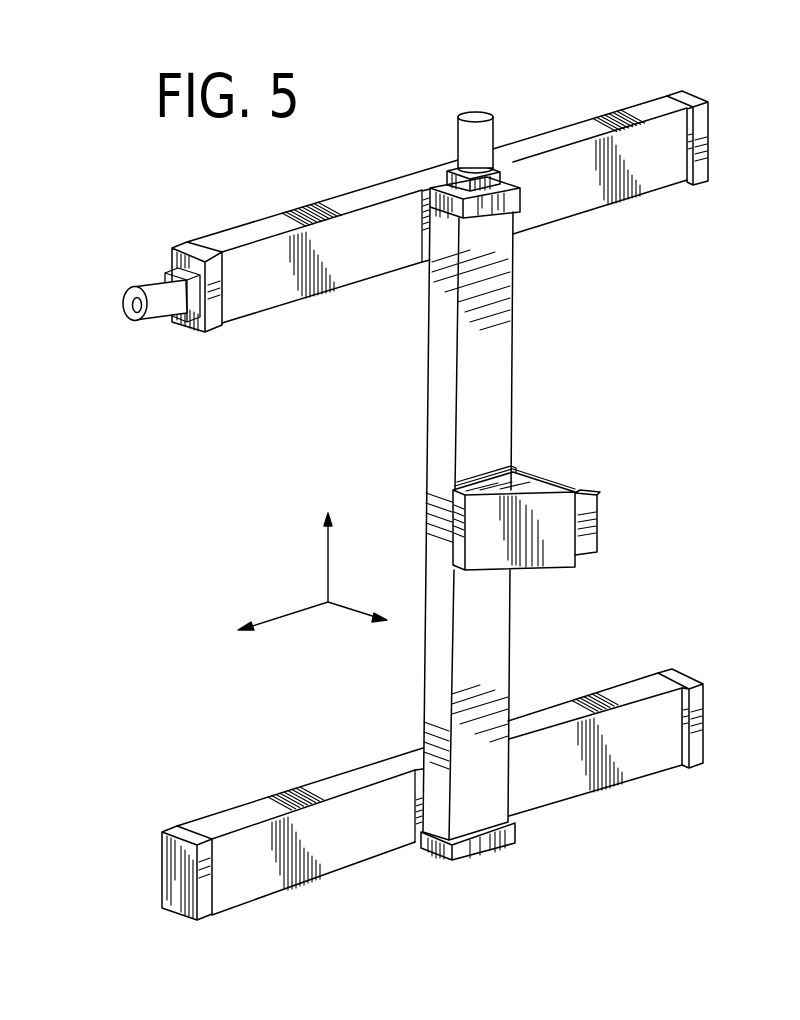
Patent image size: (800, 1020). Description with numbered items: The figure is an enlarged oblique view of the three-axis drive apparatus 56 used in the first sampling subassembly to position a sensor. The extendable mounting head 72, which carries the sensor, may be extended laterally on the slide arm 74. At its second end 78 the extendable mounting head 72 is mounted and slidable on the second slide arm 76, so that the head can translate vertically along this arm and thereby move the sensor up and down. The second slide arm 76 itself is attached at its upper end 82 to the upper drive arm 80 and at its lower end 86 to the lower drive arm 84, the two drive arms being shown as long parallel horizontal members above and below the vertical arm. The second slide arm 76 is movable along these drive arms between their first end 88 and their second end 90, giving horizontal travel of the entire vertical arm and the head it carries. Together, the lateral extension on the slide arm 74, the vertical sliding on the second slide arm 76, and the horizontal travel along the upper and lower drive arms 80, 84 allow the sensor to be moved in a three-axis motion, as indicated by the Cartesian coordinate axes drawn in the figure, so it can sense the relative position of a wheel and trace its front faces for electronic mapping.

The drive apparatus 56 is at (339, 444).
The extendable mounting head 72 is at (537, 567).
The slide arm 74 is at (561, 488).
The second slide arm 76 is at (500, 412).
The second end 78 is at (513, 470).
The upper drive arm 80 is at (270, 305).
The upper end 82 is at (521, 214).
The lower drive arm 84 is at (603, 787).
The lower end 86 is at (422, 854).
The first end 88 is at (181, 247).
The second end 90 is at (696, 98).